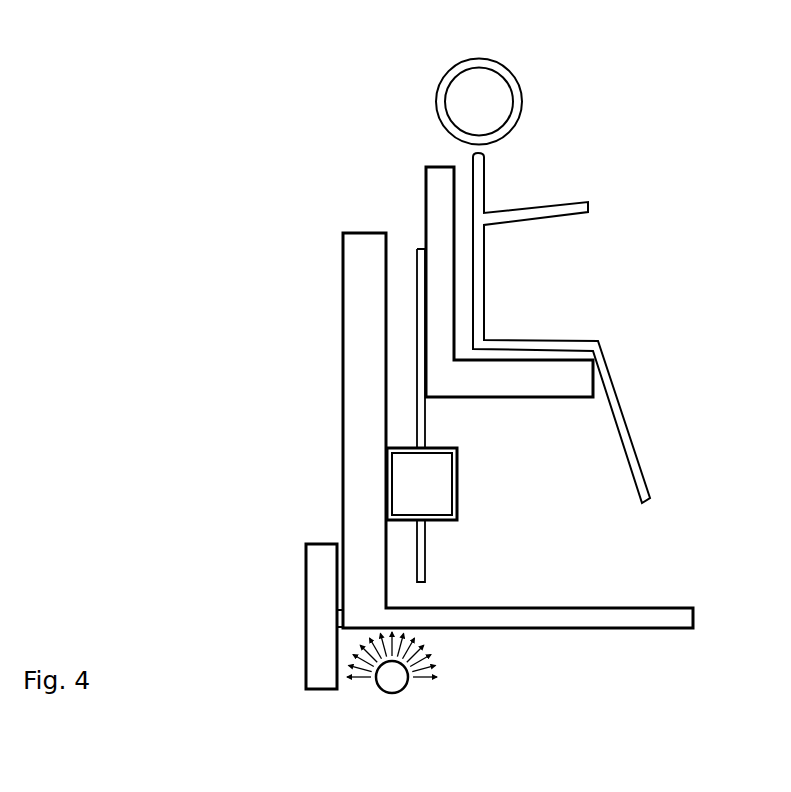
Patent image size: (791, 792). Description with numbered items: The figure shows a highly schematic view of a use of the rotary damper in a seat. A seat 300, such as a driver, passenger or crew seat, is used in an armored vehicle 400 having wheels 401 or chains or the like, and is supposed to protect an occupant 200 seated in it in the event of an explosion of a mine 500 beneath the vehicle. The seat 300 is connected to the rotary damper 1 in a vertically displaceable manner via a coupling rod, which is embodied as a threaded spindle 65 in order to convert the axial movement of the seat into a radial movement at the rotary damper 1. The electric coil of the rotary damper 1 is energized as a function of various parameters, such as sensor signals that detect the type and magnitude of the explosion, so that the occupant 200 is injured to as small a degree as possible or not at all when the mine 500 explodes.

The rotary damper 1 is at (457, 498).
The threaded spindle 65 is at (425, 415).
The occupant 200 is at (574, 128).
The seat 300 is at (422, 156).
The armored vehicle 400 is at (357, 448).
The wheel 401 is at (317, 563).
The mine 500 is at (392, 680).